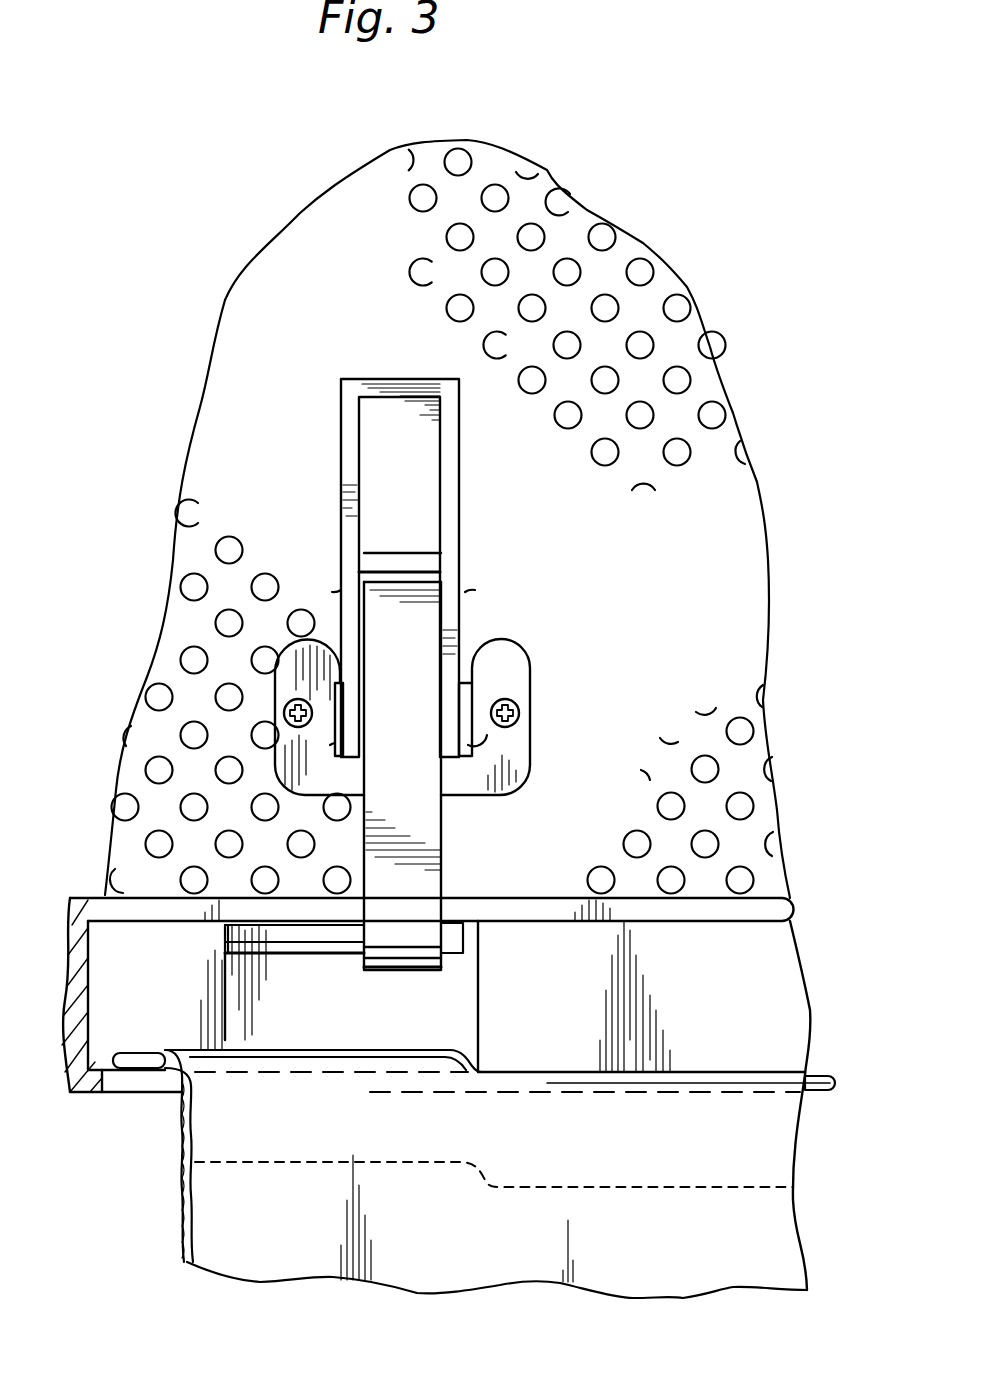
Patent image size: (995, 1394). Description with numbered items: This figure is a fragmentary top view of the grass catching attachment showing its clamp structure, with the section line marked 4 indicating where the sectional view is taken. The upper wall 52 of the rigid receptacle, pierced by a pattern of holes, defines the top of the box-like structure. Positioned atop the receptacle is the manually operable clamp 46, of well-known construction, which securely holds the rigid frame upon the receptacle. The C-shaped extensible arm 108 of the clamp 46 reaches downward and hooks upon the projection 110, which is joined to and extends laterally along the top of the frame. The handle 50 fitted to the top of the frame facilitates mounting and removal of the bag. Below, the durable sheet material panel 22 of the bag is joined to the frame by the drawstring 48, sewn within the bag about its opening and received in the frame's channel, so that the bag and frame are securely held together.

The upper wall 52 is at (325, 312).
The clamp 46 is at (476, 494).
The C-shaped extensible arm 108 is at (425, 818).
The projection 110 is at (338, 935).
The handle 50 is at (747, 1014).
The panel 22 is at (703, 1243).
The drawstring 48 is at (118, 1053).
The section line 4- 4 is at (190, 310).